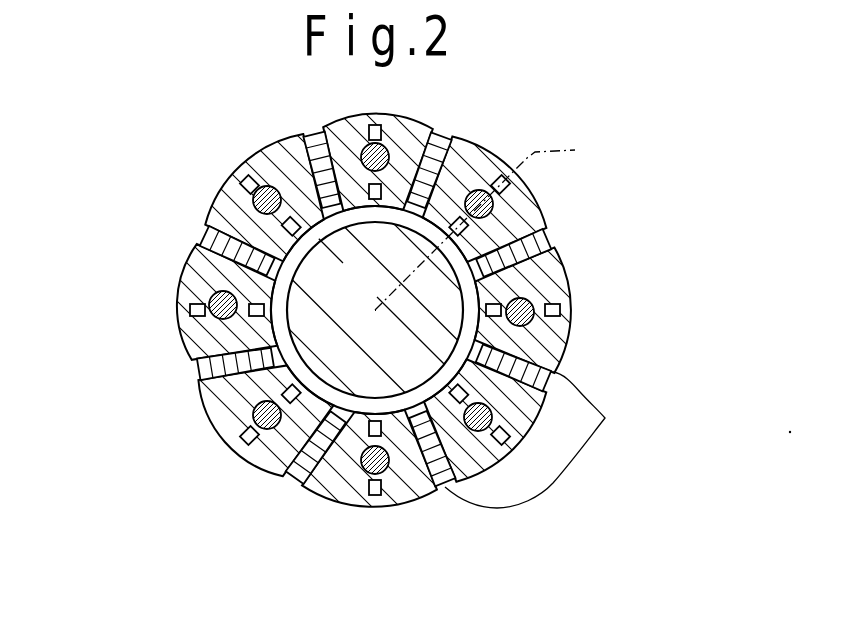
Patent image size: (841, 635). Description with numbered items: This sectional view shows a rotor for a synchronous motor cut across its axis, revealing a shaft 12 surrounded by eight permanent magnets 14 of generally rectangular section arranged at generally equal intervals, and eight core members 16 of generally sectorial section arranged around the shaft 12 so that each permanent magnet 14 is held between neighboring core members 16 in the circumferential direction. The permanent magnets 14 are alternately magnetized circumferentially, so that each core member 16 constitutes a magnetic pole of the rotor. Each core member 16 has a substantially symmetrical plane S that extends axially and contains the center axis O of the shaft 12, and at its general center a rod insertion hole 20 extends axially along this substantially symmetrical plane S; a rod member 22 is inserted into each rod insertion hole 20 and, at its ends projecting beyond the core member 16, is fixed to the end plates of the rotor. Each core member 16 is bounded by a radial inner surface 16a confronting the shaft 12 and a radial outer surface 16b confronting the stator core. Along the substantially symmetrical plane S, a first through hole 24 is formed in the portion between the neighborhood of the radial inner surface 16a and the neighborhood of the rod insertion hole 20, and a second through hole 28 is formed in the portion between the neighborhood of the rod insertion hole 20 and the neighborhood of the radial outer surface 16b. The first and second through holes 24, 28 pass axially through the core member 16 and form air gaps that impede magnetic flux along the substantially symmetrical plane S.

The shaft 12 is at (303, 328).
The permanent magnet 14 is at (542, 440).
The core member 16 is at (546, 283).
The radial inner surface 16a is at (272, 297).
The radial outer surface 16b is at (545, 232).
The rod insertion hole 20 is at (267, 186).
The rod member 22 is at (343, 118).
The first through hole 24 is at (457, 222).
The second through hole 28 is at (512, 188).
The center axis O is at (375, 324).
The substantially symmetrical plane S is at (485, 225).